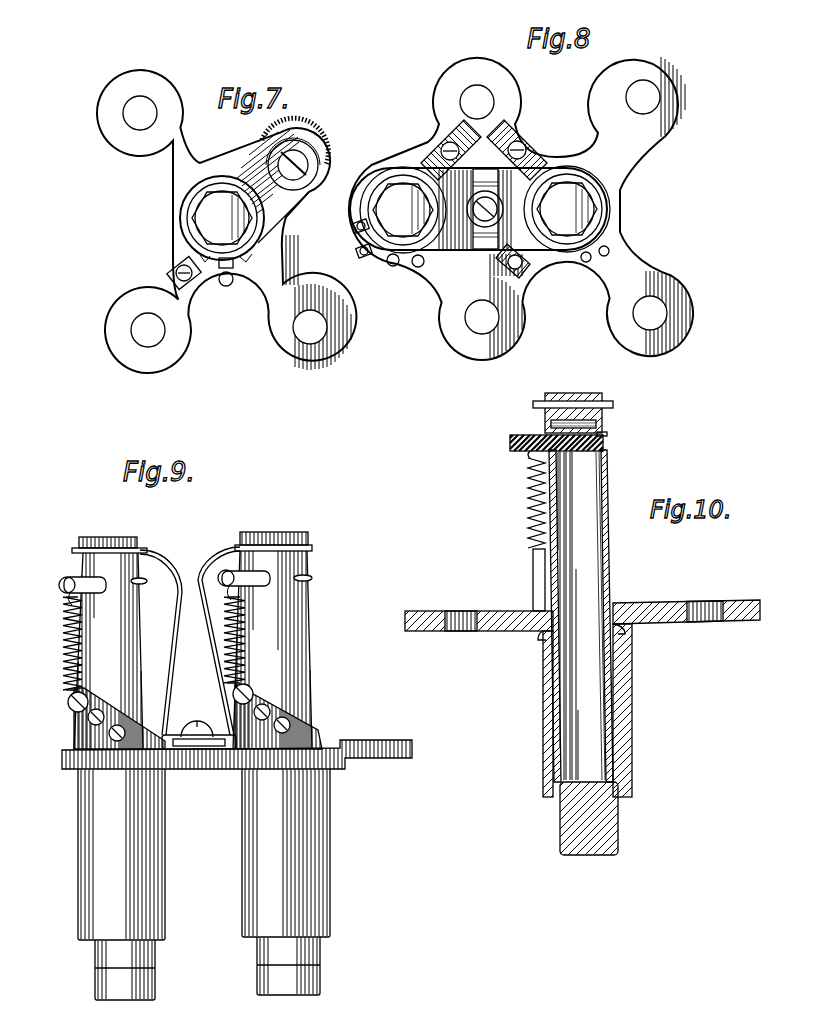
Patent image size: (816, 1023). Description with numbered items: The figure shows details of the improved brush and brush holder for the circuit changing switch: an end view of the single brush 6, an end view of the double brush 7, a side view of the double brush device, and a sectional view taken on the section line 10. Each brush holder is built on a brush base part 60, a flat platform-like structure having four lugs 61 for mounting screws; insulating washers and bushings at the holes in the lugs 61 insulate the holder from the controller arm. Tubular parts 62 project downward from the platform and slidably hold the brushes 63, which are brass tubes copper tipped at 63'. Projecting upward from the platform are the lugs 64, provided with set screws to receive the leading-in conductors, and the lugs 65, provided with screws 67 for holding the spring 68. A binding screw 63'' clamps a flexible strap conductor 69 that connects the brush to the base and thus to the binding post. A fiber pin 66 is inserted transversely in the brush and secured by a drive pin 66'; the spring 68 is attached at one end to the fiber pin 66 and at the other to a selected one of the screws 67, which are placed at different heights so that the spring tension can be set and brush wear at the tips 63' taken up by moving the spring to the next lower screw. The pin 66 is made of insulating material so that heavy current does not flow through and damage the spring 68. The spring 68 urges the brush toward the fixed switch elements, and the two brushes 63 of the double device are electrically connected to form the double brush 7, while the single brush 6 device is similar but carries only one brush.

In FIG. 7, the single brush 6 is at (220, 219).
In FIG. 8, the double brush 7 is at (557, 213).
In FIG. 8, the section line 10 is at (620, 120).
In FIG. 8, the brush base part 60 is at (482, 250).
In FIG. 8, the lugs 61 is at (618, 92).
In FIG. 9, the lugs 61 is at (378, 744).
In FIG. 10, the lugs 61 is at (414, 610).
In FIG. 9, the tubular parts 62 is at (245, 838).
In FIG. 10, the tubular parts 62 is at (547, 747).
In FIG. 9, the brushes 63 is at (193, 632).
In FIG. 10, the brushes 63 is at (619, 613).
In FIG. 10, the copper tip 63' is at (621, 818).
In FIG. 9, the binding screw 63'' is at (183, 519).
In FIG. 10, the binding screw 63'' is at (583, 397).
In FIG. 8, the lugs 64 is at (507, 146).
In FIG. 9, the lugs 65 is at (90, 727).
In FIG. 9, the fiber pin 66 is at (194, 569).
In FIG. 10, the fiber pin 66 is at (530, 434).
In FIG. 9, the drive pin 66' is at (250, 609).
In FIG. 10, the drive pin 66' is at (630, 422).
In FIG. 9, the screws 67 is at (250, 692).
In FIG. 9, the spring 68 is at (62, 640).
In FIG. 10, the spring 68 is at (530, 500).
In FIG. 9, the flexible strap conductor 69 is at (150, 550).